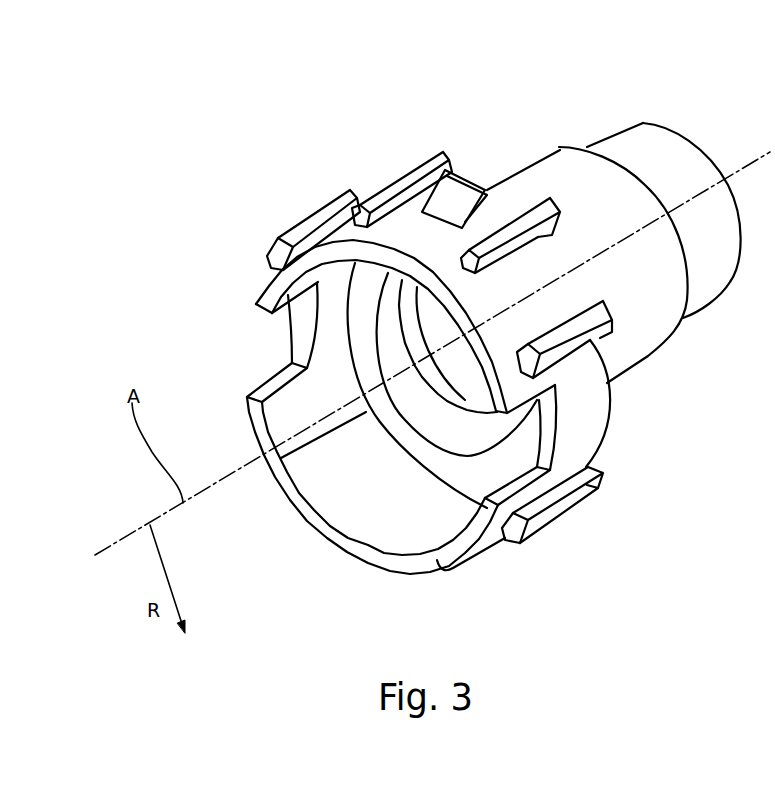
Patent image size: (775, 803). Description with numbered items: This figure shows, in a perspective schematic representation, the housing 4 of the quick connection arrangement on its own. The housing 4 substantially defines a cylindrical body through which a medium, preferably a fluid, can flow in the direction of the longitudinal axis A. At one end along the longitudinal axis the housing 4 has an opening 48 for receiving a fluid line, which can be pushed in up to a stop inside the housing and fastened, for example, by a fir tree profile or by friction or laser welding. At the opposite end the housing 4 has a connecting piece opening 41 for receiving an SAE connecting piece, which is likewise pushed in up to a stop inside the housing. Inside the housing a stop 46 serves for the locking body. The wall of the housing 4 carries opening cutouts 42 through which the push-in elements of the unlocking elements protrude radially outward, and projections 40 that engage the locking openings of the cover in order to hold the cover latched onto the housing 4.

The housing 4 is at (164, 171).
The projections 40 is at (453, 200).
The connecting piece opening 41 is at (305, 403).
The opening cutouts 42 is at (267, 340).
The stop for locking body 46 is at (473, 418).
The opening for fluid line 48 is at (657, 160).